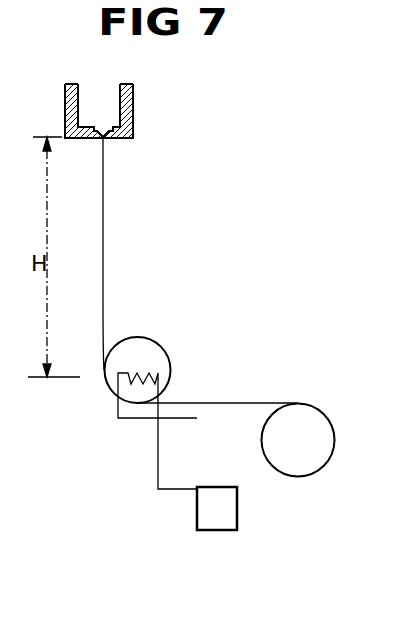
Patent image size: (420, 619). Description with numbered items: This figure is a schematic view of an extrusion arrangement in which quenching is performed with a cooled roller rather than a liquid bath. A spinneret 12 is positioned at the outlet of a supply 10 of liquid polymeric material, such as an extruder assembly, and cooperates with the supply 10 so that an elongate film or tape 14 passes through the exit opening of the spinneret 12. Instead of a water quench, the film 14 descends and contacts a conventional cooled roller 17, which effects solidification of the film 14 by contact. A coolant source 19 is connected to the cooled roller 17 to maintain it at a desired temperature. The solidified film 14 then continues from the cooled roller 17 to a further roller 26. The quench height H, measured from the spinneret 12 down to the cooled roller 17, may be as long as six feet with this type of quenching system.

The supply 10 is at (133, 108).
The spinneret 12 is at (105, 140).
The film 14 is at (104, 222).
The cooled roller 17 is at (150, 341).
The coolant source 19 is at (207, 487).
The take-up wheel 26 is at (293, 404).